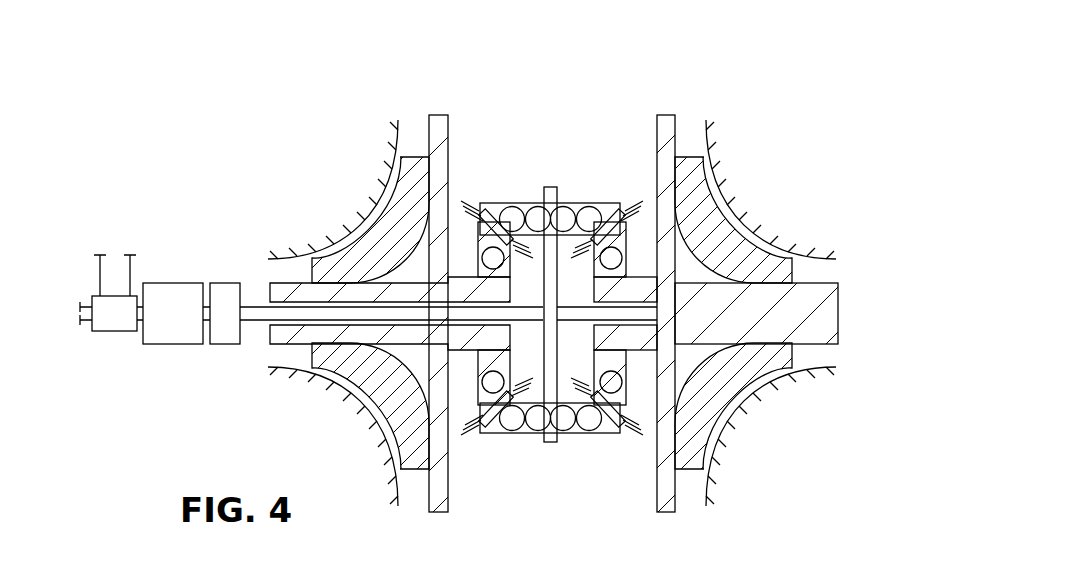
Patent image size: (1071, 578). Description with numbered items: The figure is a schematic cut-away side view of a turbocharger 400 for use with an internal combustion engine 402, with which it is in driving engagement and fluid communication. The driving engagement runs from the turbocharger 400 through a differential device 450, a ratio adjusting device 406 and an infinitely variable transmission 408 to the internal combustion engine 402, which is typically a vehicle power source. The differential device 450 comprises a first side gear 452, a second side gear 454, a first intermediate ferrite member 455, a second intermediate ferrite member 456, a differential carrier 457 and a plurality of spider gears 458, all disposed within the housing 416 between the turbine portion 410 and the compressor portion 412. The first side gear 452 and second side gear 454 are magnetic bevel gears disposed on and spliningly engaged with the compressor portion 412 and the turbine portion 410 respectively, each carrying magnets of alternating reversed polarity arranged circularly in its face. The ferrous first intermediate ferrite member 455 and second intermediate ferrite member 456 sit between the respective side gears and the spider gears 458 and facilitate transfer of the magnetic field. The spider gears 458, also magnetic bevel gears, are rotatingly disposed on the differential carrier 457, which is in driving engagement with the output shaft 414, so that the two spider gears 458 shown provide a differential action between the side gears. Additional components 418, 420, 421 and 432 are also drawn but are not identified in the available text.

The turbocharger 400 is at (722, 73).
The internal combustion engine 402 is at (113, 332).
The ratio adjusting device 406 is at (221, 345).
The infinitely variable transmission 408 is at (175, 345).
The turbine portion 410 is at (838, 300).
The compressor portion 412 is at (270, 291).
The output shaft 414 is at (260, 327).
The housing 416 is at (399, 122).
The electrical lead 418 is at (96, 297).
The electrical lead 420 is at (133, 290).
The shaft 421 is at (417, 308).
The shaft end 432 is at (86, 323).
The differential device 450 is at (516, 160).
The first side gear 452 is at (501, 266).
The second side gear 454 is at (603, 375).
The first intermediate ferrite member 455 is at (488, 203).
The second intermediate ferrite member 456 is at (605, 434).
The differential carrier 457 is at (559, 270).
The spider gears 458 is at (597, 203).